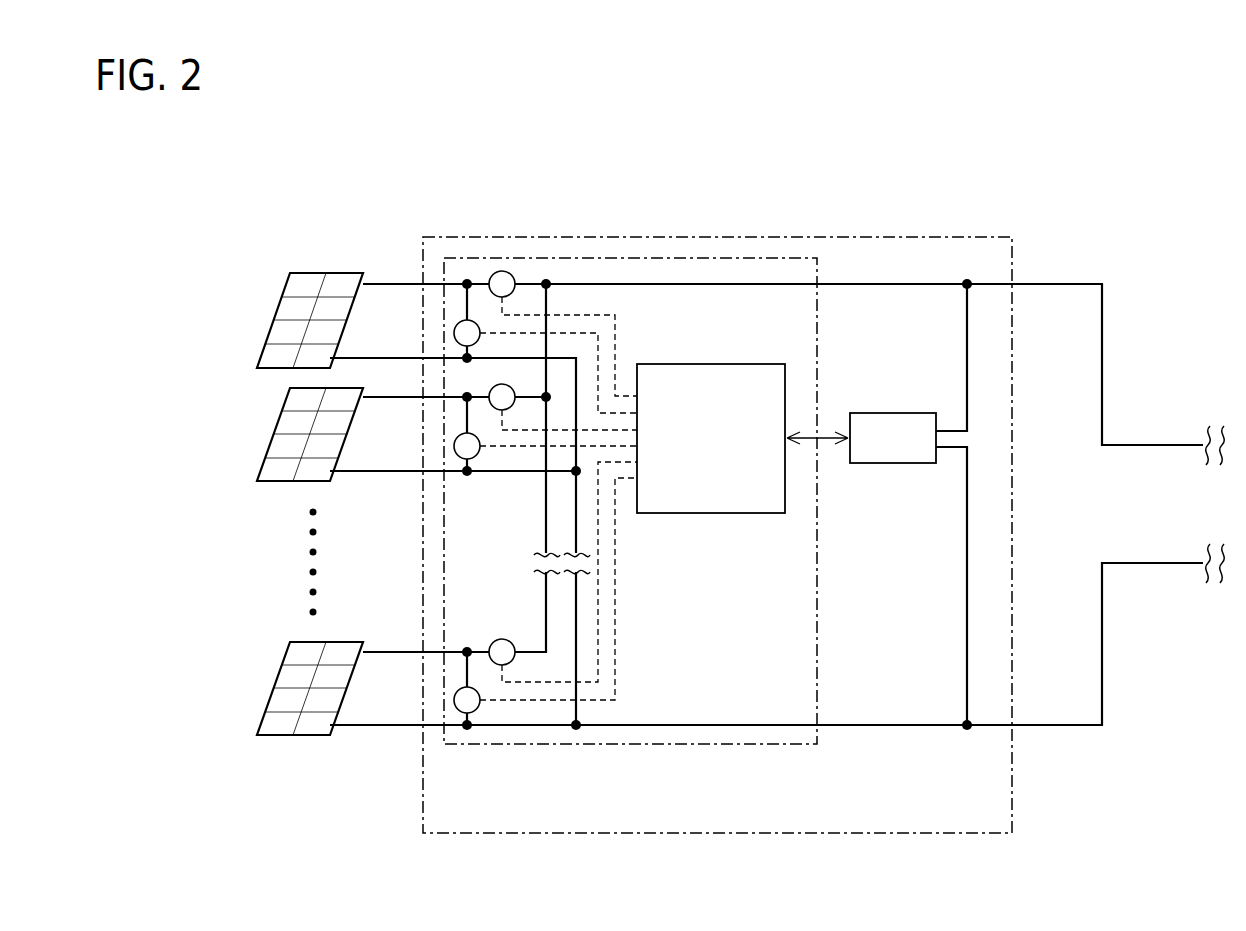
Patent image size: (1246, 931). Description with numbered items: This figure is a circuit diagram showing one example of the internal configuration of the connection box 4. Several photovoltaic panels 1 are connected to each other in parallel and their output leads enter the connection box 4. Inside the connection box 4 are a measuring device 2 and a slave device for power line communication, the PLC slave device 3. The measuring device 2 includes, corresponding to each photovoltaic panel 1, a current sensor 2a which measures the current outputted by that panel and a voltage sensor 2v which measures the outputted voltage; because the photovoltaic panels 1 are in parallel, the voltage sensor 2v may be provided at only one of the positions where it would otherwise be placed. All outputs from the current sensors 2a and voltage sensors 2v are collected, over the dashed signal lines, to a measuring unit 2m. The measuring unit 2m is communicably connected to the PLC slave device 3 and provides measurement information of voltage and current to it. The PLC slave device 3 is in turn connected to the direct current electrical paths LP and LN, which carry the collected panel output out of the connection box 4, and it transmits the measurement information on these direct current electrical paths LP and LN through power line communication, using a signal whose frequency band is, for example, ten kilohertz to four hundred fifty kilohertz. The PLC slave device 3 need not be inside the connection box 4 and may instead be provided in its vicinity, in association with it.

The photovoltaic panel 1 is at (280, 304).
The measuring device 2 is at (588, 746).
The current sensor 2a is at (511, 294).
The voltage sensor 2v is at (476, 344).
The measuring unit 2m is at (668, 514).
The PLC slave device 3 is at (894, 412).
The connection box 4 is at (676, 236).
The direct current electrical path LP is at (1061, 270).
The direct current electrical path LN is at (1062, 711).